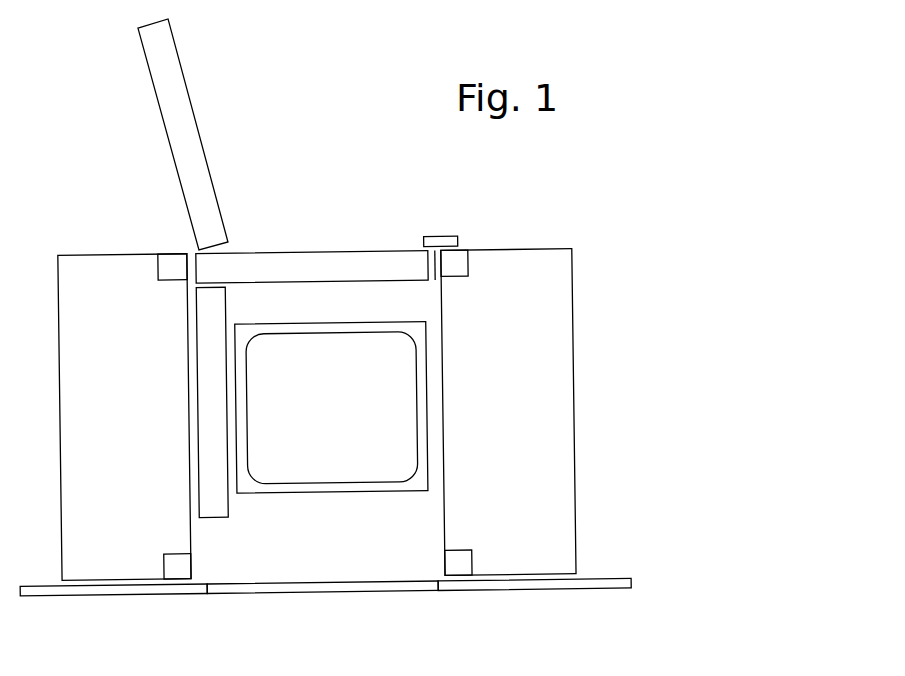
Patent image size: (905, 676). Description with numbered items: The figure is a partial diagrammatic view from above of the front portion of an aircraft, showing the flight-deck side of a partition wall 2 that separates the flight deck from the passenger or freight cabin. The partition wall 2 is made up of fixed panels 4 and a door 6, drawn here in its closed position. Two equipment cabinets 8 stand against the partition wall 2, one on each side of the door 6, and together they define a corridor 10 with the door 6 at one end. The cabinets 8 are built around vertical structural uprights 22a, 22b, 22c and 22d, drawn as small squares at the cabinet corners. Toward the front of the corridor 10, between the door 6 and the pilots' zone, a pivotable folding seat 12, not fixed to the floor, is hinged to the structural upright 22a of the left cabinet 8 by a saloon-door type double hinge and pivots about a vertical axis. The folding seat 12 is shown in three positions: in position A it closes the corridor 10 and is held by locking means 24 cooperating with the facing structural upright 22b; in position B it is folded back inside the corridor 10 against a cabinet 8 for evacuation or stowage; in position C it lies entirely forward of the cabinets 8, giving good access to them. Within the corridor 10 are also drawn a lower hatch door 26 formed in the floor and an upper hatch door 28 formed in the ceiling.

The partition wall 2 is at (616, 579).
The fixed panels 4 is at (115, 585).
The door 6 is at (323, 585).
The cabinets 8 is at (60, 410).
The corridor 10 is at (356, 558).
The folding seat 12 is at (213, 223).
The structural upright 22a is at (172, 266).
The structural upright 22b is at (457, 268).
The structural upright 22c is at (463, 565).
The structural upright 22d is at (171, 560).
The locking means 24 is at (447, 244).
The lower hatch door 26 is at (428, 474).
The upper hatch door 28 is at (422, 381).